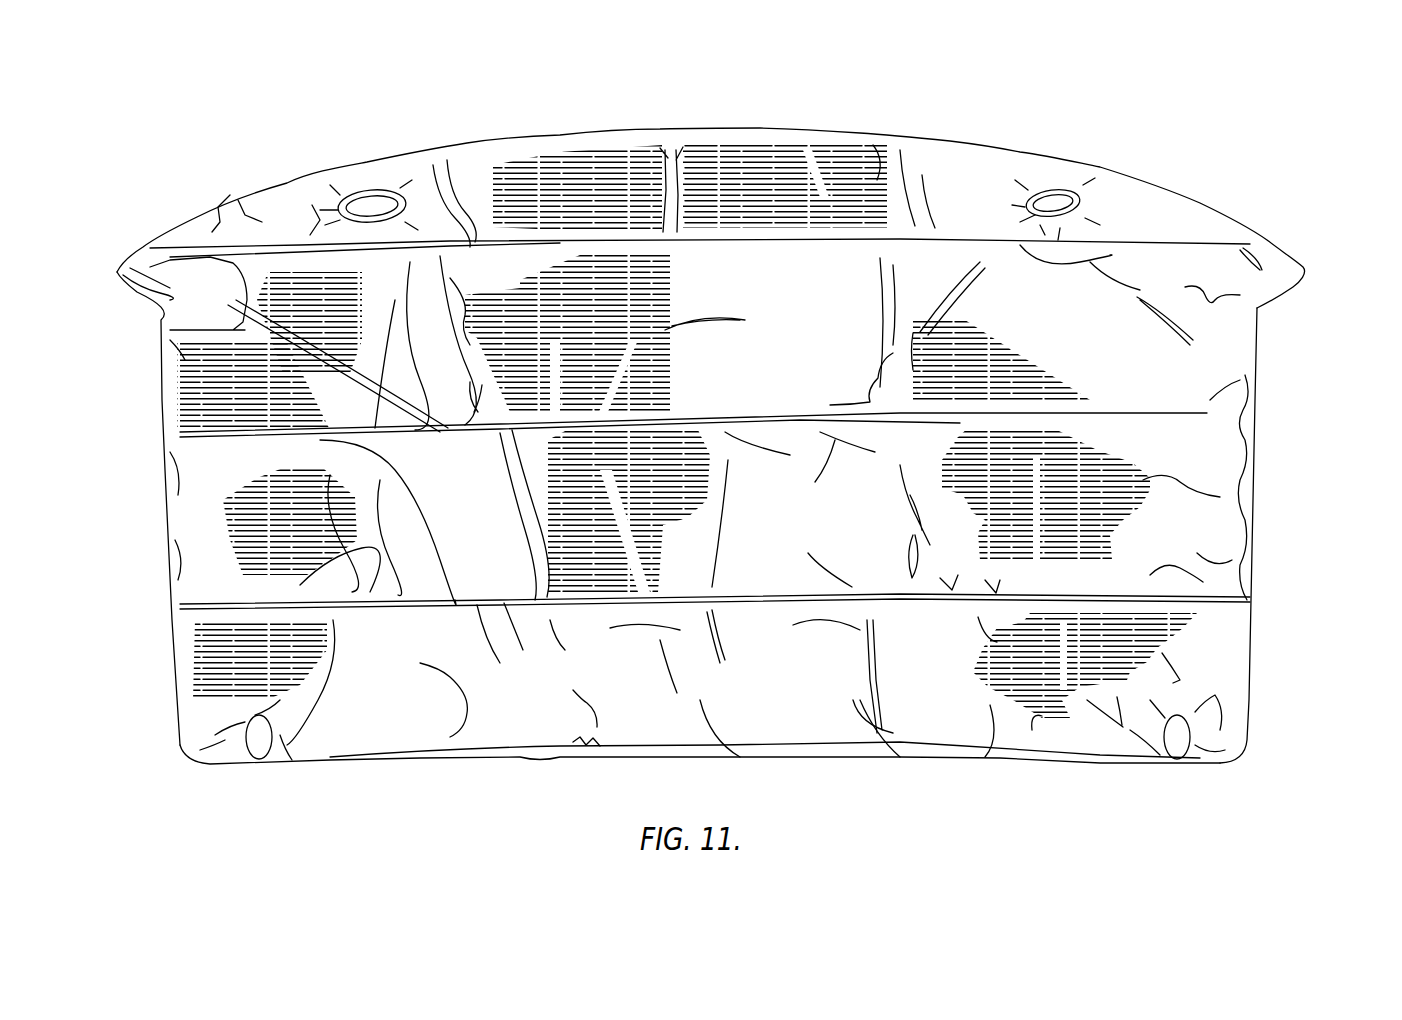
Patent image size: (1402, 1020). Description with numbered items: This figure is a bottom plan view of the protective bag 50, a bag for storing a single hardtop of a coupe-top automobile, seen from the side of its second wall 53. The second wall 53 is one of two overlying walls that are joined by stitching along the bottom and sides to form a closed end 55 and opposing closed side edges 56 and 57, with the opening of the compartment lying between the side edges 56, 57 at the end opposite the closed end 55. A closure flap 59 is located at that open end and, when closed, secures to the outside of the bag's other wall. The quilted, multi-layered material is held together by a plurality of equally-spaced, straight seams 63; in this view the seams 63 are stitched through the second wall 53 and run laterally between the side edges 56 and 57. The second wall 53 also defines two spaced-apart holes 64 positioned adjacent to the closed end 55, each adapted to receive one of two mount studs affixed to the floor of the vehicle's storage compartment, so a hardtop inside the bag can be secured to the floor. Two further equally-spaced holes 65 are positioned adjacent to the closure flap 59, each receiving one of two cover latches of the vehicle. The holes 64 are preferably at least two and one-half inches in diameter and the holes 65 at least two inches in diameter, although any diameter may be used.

The protective bag 50 is at (1285, 157).
The second wall 53 is at (1223, 658).
The closed end 55 is at (960, 750).
The closed side edge 56 is at (1257, 508).
The closed side edge 57 is at (163, 467).
The closure flap 59 is at (467, 165).
The seams 63 is at (1147, 600).
The hole 64 is at (250, 723).
The hole 65 is at (363, 200).